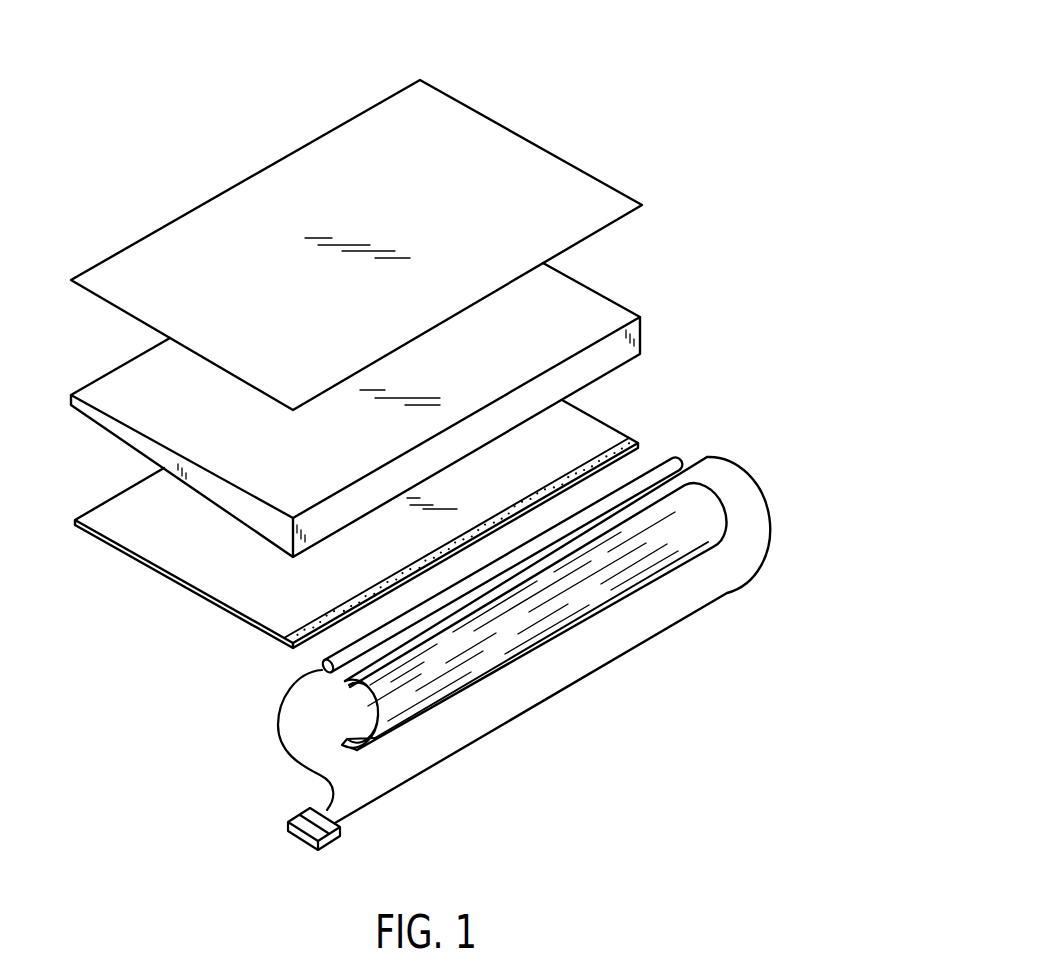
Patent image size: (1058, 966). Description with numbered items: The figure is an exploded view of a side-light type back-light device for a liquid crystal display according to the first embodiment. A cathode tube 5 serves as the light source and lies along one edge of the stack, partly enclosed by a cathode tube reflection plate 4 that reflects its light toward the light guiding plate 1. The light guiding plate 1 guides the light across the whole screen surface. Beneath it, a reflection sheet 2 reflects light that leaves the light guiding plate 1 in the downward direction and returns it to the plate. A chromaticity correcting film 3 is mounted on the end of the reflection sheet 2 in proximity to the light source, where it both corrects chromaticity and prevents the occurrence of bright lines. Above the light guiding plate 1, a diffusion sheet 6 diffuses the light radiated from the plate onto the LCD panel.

The light guiding plate 1 is at (582, 297).
The reflection sheet 2 is at (602, 435).
The chromaticity correcting film 3 is at (335, 608).
The cathode tube reflection plate 4 is at (445, 680).
The cathode tube 5 is at (672, 462).
The diffusion sheet 6 is at (469, 123).